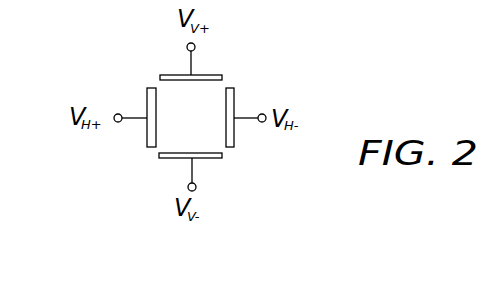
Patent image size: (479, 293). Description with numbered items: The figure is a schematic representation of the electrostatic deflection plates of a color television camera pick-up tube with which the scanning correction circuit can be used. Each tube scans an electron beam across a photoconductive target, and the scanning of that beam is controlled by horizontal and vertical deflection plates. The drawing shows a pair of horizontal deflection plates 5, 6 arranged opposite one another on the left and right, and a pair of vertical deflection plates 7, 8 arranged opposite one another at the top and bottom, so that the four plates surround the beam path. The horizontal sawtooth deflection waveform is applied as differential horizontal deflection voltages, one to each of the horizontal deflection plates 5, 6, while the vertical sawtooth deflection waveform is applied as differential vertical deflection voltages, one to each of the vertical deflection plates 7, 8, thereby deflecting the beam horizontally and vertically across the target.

The horizontal deflection plate 5 is at (146, 94).
The horizontal deflection plate 6 is at (234, 95).
The vertical deflection plate 7 is at (212, 75).
The vertical deflection plate 8 is at (212, 160).